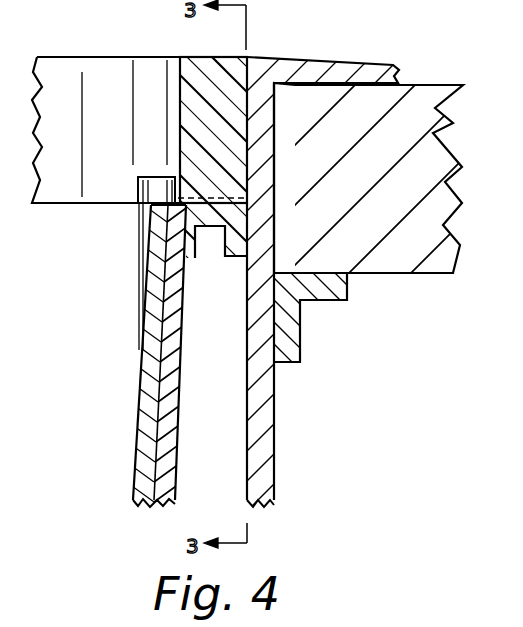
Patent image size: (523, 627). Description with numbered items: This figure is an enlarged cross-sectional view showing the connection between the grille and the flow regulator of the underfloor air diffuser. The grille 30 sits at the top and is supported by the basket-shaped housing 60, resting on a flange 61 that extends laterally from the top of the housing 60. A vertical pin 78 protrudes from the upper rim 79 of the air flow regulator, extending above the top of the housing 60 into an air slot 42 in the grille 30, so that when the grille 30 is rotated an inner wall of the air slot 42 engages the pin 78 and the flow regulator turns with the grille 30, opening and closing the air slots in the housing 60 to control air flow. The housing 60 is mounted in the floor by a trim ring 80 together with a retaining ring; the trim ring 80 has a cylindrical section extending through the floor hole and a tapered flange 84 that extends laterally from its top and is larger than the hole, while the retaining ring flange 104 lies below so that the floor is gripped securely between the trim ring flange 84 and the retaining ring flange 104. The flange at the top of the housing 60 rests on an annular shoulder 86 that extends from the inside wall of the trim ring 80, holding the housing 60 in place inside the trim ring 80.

The air slot 42 is at (74, 83).
The grille 30 is at (195, 97).
The tapered flange 84 is at (325, 67).
The trim ring 80 is at (274, 422).
The retaining ring flange 104 is at (333, 300).
The pin 78 is at (145, 192).
The upper rim 79 is at (152, 273).
The flange 61 is at (145, 323).
The annular shoulder 86 is at (207, 206).
The housing 60 is at (177, 402).